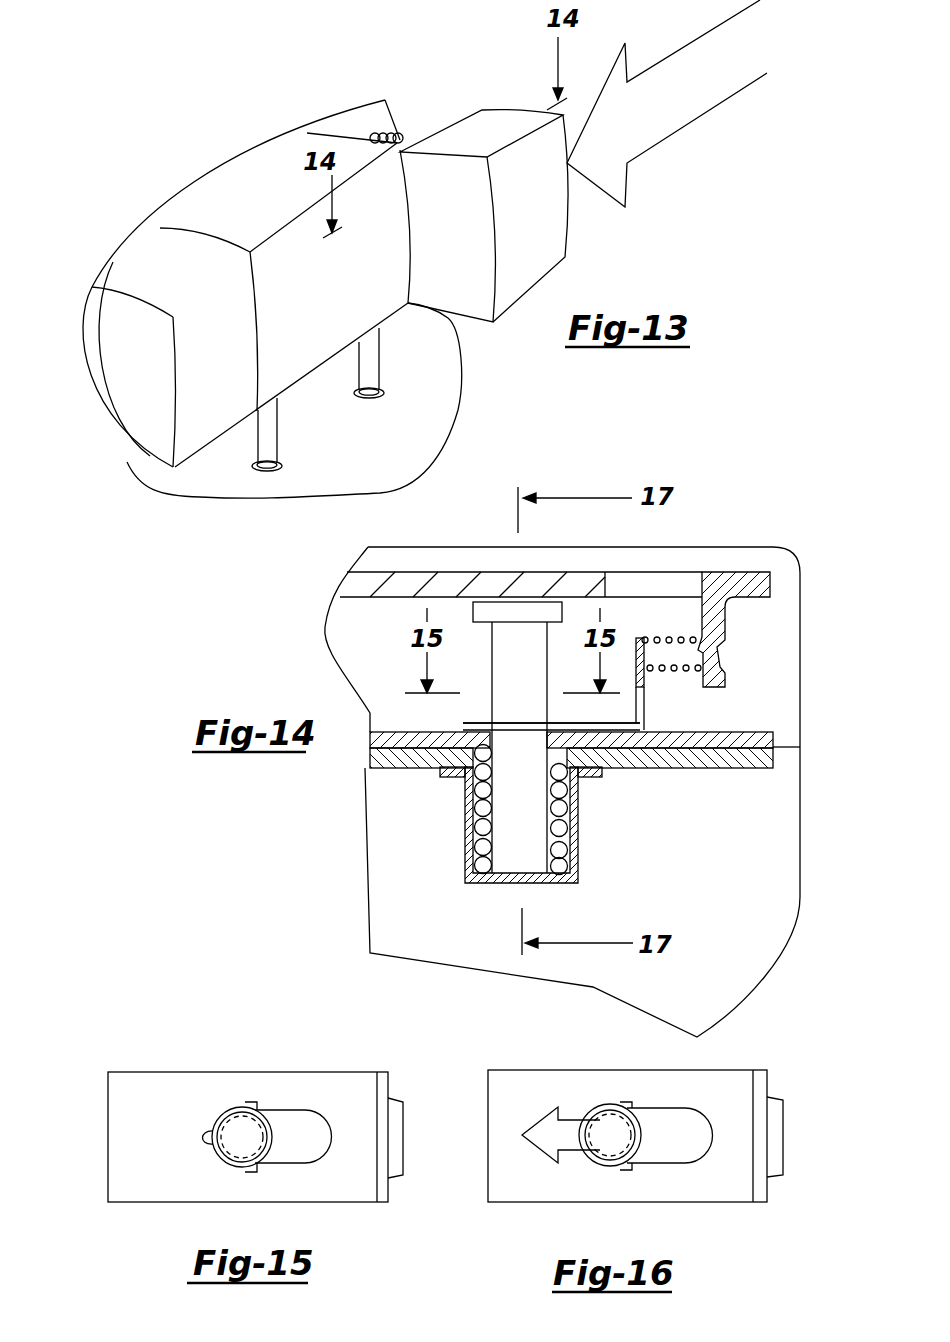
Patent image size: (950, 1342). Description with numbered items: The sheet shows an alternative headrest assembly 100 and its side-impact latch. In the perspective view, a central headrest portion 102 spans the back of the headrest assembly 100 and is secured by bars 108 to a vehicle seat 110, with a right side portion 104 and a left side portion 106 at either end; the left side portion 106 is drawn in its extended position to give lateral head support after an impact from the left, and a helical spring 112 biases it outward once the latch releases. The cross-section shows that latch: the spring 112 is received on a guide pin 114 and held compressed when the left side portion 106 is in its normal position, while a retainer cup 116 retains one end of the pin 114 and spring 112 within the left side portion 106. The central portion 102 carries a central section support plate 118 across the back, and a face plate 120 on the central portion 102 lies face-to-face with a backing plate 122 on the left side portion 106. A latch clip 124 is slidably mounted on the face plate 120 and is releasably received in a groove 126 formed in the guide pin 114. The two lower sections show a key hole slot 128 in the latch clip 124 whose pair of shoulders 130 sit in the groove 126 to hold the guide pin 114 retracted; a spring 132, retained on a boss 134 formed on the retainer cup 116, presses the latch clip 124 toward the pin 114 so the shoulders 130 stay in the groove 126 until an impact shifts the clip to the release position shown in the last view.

In FIG. 13, the headrest assembly 100 is at (368, 274).
In FIG. 13, the central headrest portion 102 is at (307, 376).
In FIG. 14, the central headrest portion 102 is at (780, 632).
In FIG. 13, the right side portion 104 is at (142, 446).
In FIG. 13, the left side portion 106 is at (545, 247).
In FIG. 14, the left side portion 106 is at (783, 865).
In FIG. 13, the bars 108 is at (372, 372).
In FIG. 13, the vehicle seat 110 is at (313, 492).
In FIG. 13, the helical spring 112 is at (400, 133).
In FIG. 14, the helical spring 112 is at (558, 810).
In FIG. 14, the guide pin 114 is at (510, 863).
In FIG. 15, the guide pin 114 is at (225, 1137).
In FIG. 16, the guide pin 114 is at (608, 1128).
In FIG. 14, the retainer cup 116 is at (567, 872).
In FIG. 14, the central section support plate 118 is at (487, 580).
In FIG. 14, the face plate 120 is at (757, 732).
In FIG. 14, the backing plate 122 is at (755, 767).
In FIG. 14, the latch clip 124 is at (643, 713).
In FIG. 15, the latch clip 124 is at (347, 1083).
In FIG. 16, the latch clip 124 is at (737, 1083).
In FIG. 14, the groove 126 is at (513, 722).
In FIG. 15, the groove 126 is at (280, 1117).
In FIG. 16, the groove 126 is at (650, 1120).
In FIG. 15, the key hole slot 128 is at (200, 1140).
In FIG. 16, the key hole slot 128 is at (710, 1138).
In FIG. 15, the shoulders 130 is at (258, 1104).
In FIG. 16, the shoulders 130 is at (636, 1103).
In FIG. 14, the spring 132 is at (685, 637).
In FIG. 15, the boss 134 is at (402, 1133).
In FIG. 16, the boss 134 is at (780, 1130).